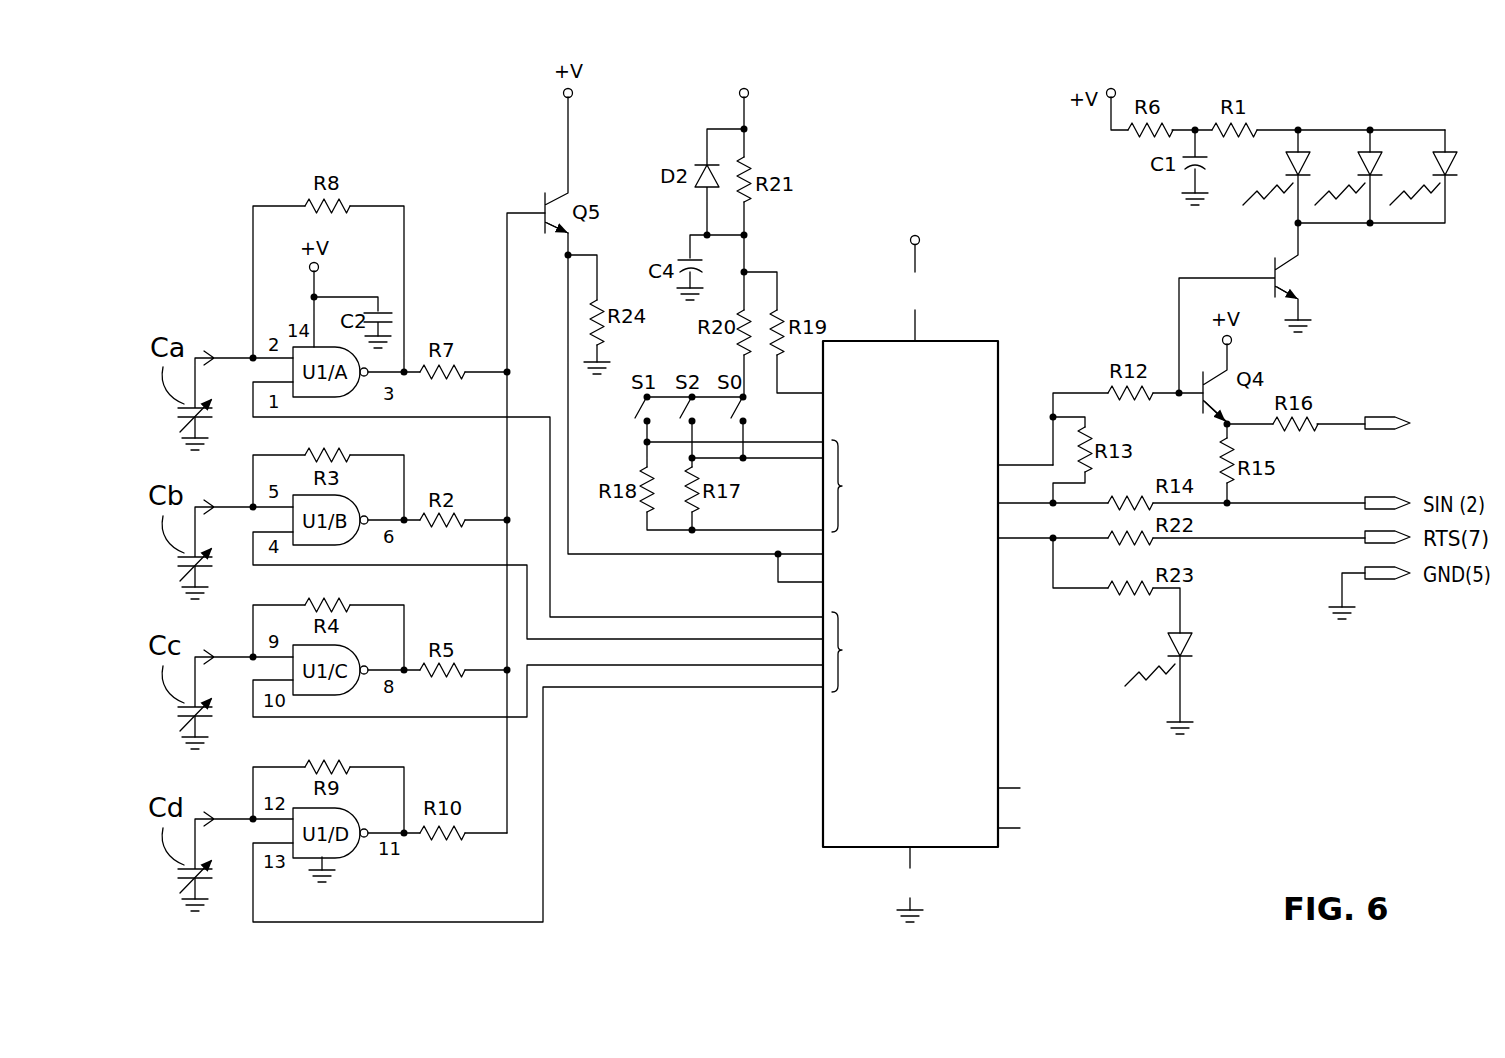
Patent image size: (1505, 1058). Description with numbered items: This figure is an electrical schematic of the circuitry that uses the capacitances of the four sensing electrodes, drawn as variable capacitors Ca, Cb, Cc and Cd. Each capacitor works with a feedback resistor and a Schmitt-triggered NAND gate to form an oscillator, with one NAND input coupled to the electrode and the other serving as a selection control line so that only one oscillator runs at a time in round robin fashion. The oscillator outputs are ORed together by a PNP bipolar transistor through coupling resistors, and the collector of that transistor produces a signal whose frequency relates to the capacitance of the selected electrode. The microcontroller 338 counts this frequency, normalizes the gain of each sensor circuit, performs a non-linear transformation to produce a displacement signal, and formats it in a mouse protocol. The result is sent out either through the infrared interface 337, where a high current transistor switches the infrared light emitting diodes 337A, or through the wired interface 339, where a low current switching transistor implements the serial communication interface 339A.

The infrared (IR) interface 337 is at (1121, 257).
The infrared light emitting diodes 337A is at (1456, 216).
The microcontroller 338 is at (857, 848).
The wired interface 339 is at (1204, 654).
The serial RS-232 communication interface 339A is at (1328, 412).